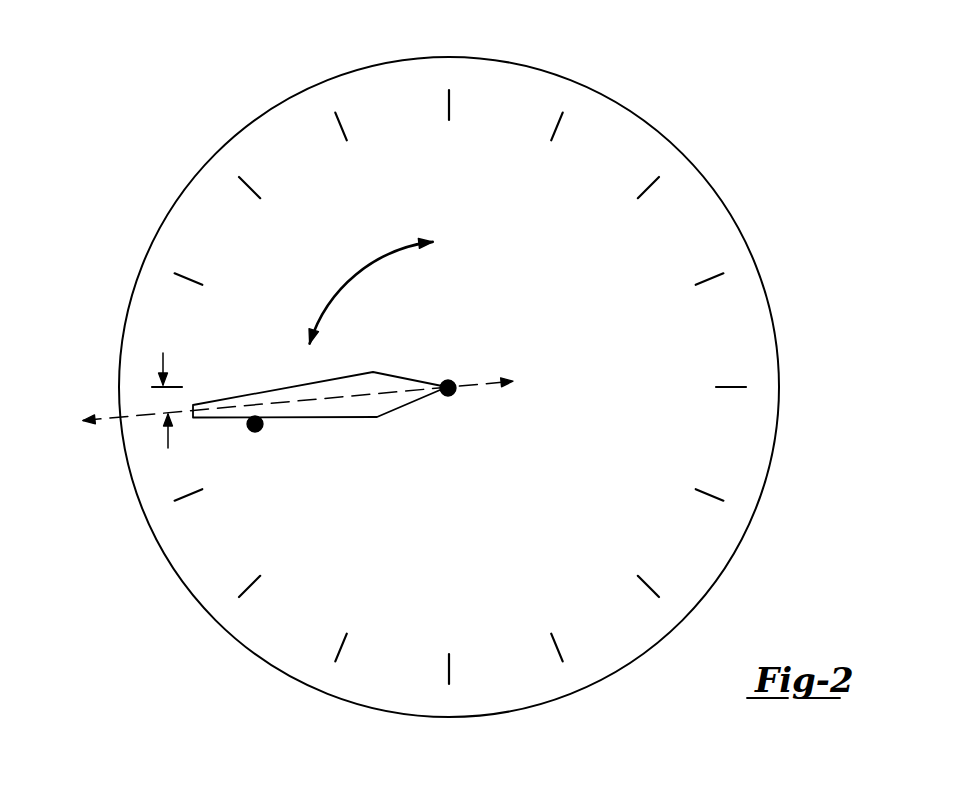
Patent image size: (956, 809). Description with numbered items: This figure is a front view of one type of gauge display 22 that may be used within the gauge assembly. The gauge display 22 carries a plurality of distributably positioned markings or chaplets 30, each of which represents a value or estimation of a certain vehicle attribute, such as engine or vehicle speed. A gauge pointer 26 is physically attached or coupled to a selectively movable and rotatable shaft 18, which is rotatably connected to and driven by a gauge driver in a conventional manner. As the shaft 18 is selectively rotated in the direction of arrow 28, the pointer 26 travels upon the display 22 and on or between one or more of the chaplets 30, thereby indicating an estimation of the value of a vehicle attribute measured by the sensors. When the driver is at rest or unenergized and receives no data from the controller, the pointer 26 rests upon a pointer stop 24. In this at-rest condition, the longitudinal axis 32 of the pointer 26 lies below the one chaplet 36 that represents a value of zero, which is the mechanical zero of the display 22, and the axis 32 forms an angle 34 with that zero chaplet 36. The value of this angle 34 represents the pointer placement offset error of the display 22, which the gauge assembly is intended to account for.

The rotor shaft 18 is at (453, 396).
The gauge display 22 is at (743, 117).
The pointer stop 24 is at (252, 432).
The pointer 26 is at (242, 396).
The direction of rotation arrow 28 is at (352, 277).
The chaplets 30 is at (187, 273).
The longitudinal axis of pointer 32 is at (150, 415).
The angle 34 is at (168, 448).
The zero chaplet 36 is at (152, 387).